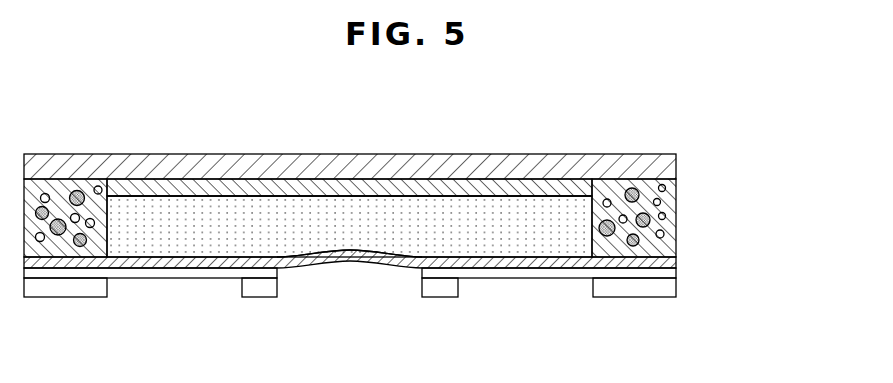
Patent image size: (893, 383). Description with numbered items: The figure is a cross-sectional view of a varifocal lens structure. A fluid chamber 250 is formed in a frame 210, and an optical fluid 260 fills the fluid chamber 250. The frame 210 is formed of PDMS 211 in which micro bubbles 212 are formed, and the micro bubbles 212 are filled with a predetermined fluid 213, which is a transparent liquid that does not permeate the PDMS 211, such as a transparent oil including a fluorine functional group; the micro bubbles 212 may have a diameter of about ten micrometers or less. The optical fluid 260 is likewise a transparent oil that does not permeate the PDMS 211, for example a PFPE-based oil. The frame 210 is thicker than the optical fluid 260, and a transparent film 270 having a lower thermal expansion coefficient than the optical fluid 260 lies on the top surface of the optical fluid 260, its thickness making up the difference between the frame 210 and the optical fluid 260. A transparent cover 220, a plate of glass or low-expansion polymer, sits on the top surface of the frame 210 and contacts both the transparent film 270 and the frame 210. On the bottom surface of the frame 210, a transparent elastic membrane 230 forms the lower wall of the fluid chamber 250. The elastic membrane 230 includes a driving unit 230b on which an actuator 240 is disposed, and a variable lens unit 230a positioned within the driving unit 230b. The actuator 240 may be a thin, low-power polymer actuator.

The frame 210 is at (416, 218).
The PDMS 211 is at (670, 199).
The micro bubbles 212 is at (650, 221).
The predetermined fluid 213 is at (648, 237).
The transparent cover 220 is at (676, 166).
The transparent elastic membrane 230 is at (404, 296).
The variable lens unit 230a is at (348, 258).
The driving unit 230b is at (142, 267).
The actuator 240 is at (197, 280).
The fluid chamber 250 is at (369, 233).
The optical fluid 260 is at (486, 210).
The transparent film 270 is at (410, 188).